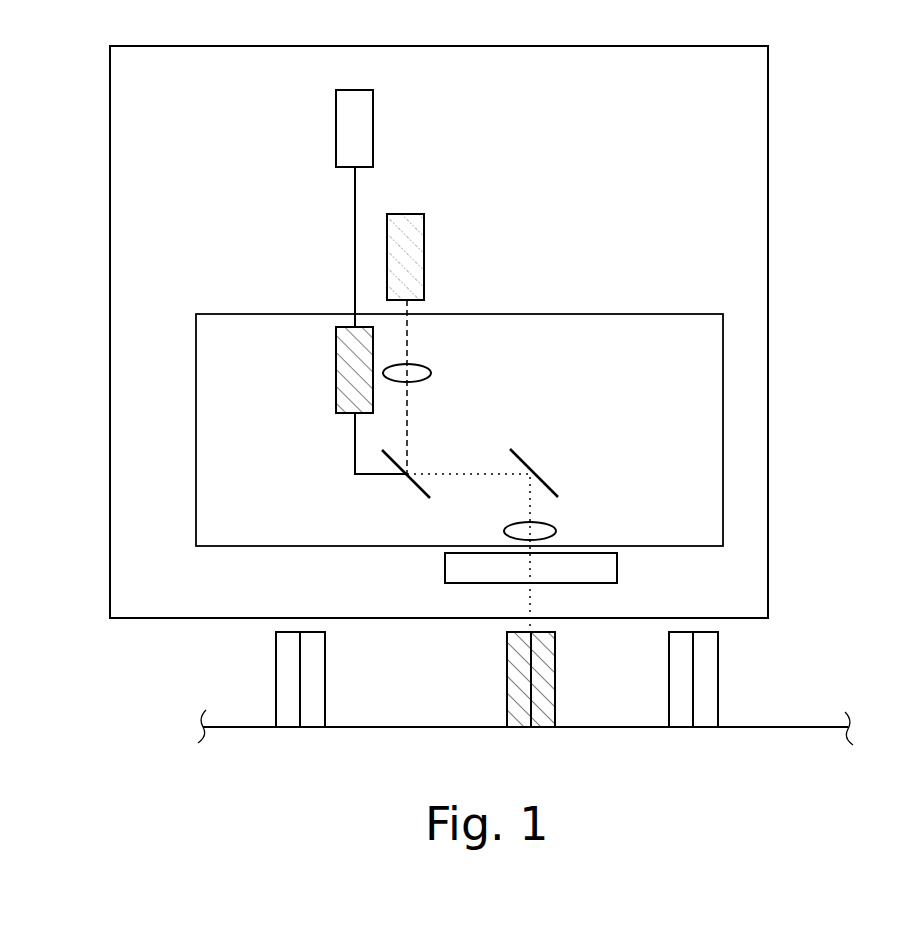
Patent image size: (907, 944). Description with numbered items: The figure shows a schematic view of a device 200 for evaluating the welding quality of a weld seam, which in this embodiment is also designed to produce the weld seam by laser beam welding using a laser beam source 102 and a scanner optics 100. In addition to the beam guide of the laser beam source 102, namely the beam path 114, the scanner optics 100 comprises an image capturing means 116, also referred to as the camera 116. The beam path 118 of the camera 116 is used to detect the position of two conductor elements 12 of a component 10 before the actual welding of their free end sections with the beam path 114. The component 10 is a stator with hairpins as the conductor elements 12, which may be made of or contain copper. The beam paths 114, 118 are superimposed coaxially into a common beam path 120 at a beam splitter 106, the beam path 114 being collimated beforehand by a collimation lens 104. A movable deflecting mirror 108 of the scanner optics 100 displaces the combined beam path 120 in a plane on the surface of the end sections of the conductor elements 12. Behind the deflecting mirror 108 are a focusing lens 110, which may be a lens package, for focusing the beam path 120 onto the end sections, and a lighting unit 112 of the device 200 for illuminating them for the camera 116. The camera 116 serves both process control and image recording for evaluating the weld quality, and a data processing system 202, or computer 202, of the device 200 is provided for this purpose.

The device 200 is at (768, 117).
The scanner optics 100 is at (723, 372).
The data processing system 202 is at (373, 110).
The beam path of the camera 118 is at (355, 452).
The laser beam source 102 is at (424, 278).
The image capturing means 116 is at (336, 349).
The beam path of the laser beam source 114 is at (408, 453).
The collimation lens 104 is at (431, 373).
The common beam path 120 is at (483, 473).
The beam splitter 106 is at (414, 483).
The deflecting mirror 108 is at (528, 460).
The focusing lens 110 is at (556, 531).
The lighting unit 112 is at (617, 568).
The component 10 is at (812, 755).
The conductor elements 12 is at (276, 700).